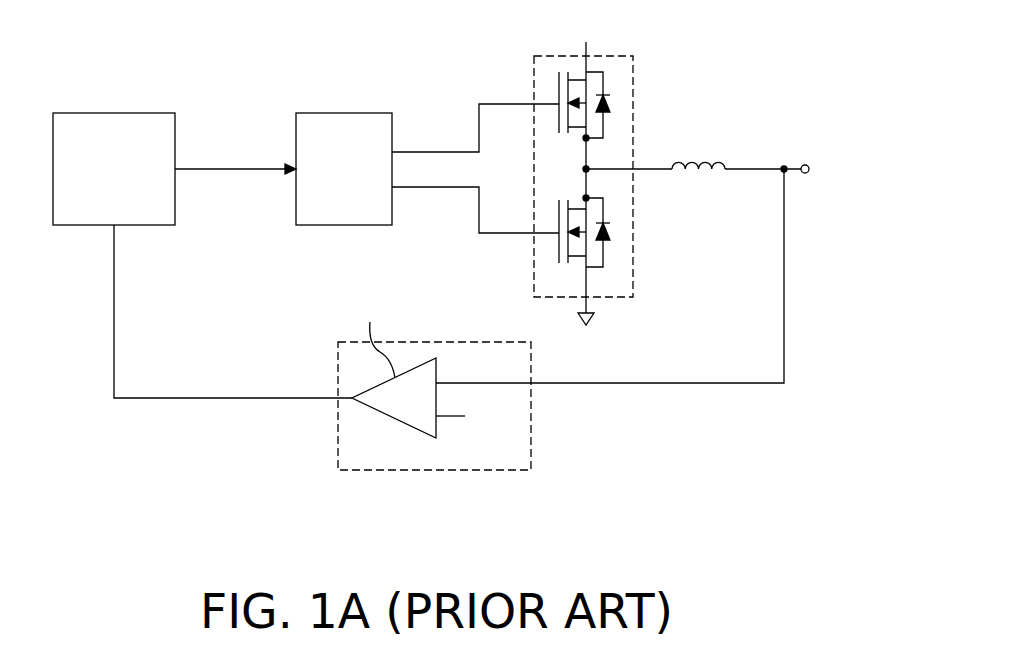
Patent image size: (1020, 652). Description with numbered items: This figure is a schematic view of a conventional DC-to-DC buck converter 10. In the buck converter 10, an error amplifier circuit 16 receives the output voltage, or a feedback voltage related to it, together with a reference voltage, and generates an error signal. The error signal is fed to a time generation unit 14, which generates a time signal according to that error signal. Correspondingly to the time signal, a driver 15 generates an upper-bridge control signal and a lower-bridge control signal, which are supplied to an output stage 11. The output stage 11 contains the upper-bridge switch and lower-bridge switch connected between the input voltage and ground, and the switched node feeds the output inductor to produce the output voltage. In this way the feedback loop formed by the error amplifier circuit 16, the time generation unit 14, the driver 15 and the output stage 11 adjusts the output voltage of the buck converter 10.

The buck converter 10 is at (466, 243).
The output stage 11 is at (633, 82).
The time generation unit 14 is at (116, 112).
The driver 15 is at (340, 112).
The error amplifier circuit 16 is at (532, 441).